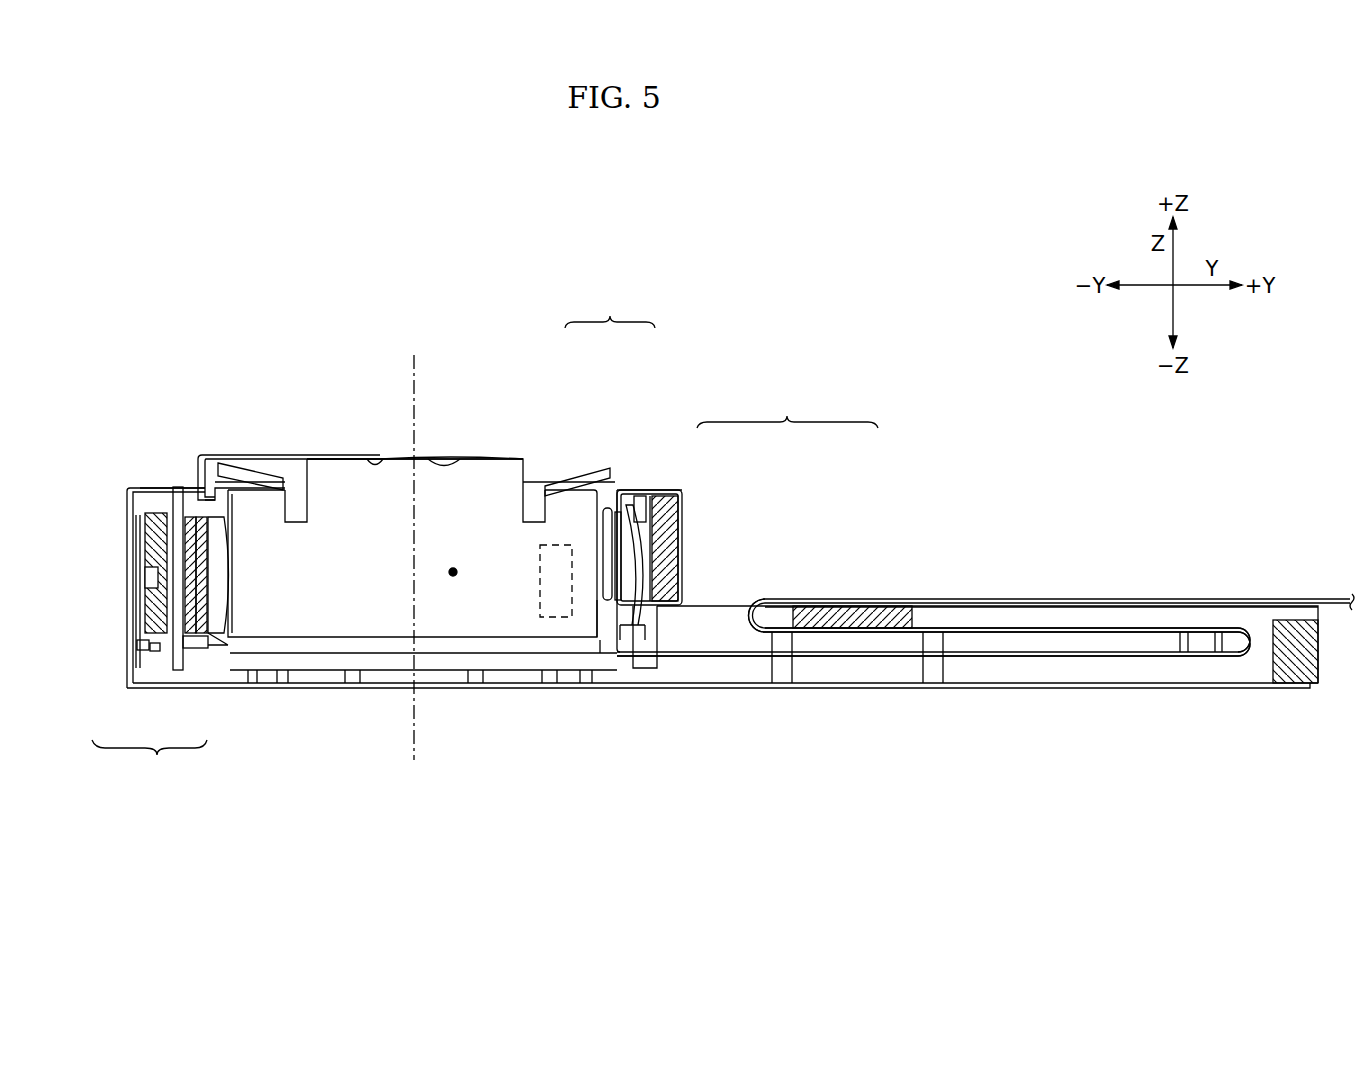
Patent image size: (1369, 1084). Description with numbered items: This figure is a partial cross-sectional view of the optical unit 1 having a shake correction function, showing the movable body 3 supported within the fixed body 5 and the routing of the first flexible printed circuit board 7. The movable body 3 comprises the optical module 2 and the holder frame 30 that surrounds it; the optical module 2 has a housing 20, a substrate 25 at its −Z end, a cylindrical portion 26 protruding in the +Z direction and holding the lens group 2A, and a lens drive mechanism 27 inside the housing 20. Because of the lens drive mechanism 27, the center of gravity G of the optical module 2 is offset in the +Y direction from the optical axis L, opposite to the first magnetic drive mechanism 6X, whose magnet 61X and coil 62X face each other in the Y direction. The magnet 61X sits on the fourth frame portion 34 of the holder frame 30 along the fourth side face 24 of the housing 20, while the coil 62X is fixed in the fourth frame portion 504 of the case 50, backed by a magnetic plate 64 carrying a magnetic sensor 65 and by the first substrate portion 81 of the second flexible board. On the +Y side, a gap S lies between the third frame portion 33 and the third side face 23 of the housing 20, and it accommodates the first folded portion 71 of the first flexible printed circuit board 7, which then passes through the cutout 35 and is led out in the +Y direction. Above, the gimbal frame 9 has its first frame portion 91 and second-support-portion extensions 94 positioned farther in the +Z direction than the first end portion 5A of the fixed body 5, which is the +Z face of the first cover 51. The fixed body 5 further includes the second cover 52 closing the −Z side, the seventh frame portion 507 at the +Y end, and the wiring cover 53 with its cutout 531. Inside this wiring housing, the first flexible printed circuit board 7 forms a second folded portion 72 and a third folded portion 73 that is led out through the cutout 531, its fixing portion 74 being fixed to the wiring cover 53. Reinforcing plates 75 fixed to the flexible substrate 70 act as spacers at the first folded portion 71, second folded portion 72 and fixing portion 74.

The optical unit having a shake correction function 1 is at (103, 296).
The first end portion 5A is at (148, 486).
The fourth frame portion 504 is at (142, 486).
The magnetic plate 64 is at (145, 530).
The magnetic sensor 65 is at (150, 578).
The first substrate portion 81 is at (136, 625).
The coil 62X is at (160, 640).
The magnet 61X is at (193, 640).
The first magnetic drive mechanism 6X is at (149, 759).
The fourth frame portion 34 is at (205, 648).
The fourth side face 24 is at (220, 645).
The substrate 25 is at (315, 655).
The housing 20 is at (372, 640).
The second-support-portion extension 94 is at (176, 486).
The gimbal frame 9 is at (232, 447).
The first frame portion 91 is at (268, 467).
The cylindrical portion 26 is at (338, 460).
The lens group 2A is at (388, 457).
The optical axis L is at (420, 378).
The movable body 3 is at (610, 312).
The optical module 2 is at (514, 444).
The holder frame 30 is at (652, 490).
The first folded portion 71 is at (631, 503).
The fixed body 5 is at (787, 409).
The first cover 51 is at (646, 494).
The case 50 is at (665, 520).
The wiring cover 53 is at (832, 628).
The second cover 52 is at (948, 686).
The reinforcing plate 75 is at (628, 535).
The third frame portion 33 is at (612, 560).
The cutout 35 is at (632, 615).
The cutout 531 is at (795, 600).
The third folded portion 73 is at (978, 598).
The first flexible printed circuit board 7 is at (1247, 590).
The center of gravity G is at (467, 575).
The lens drive mechanism 27 is at (556, 620).
The third side face 23 is at (592, 605).
The gap S is at (607, 664).
The flexible substrate 70 is at (733, 656).
The fixing portion 74 is at (828, 632).
The second folded portion 72 is at (1138, 658).
The seventh frame portion 507 is at (1295, 675).